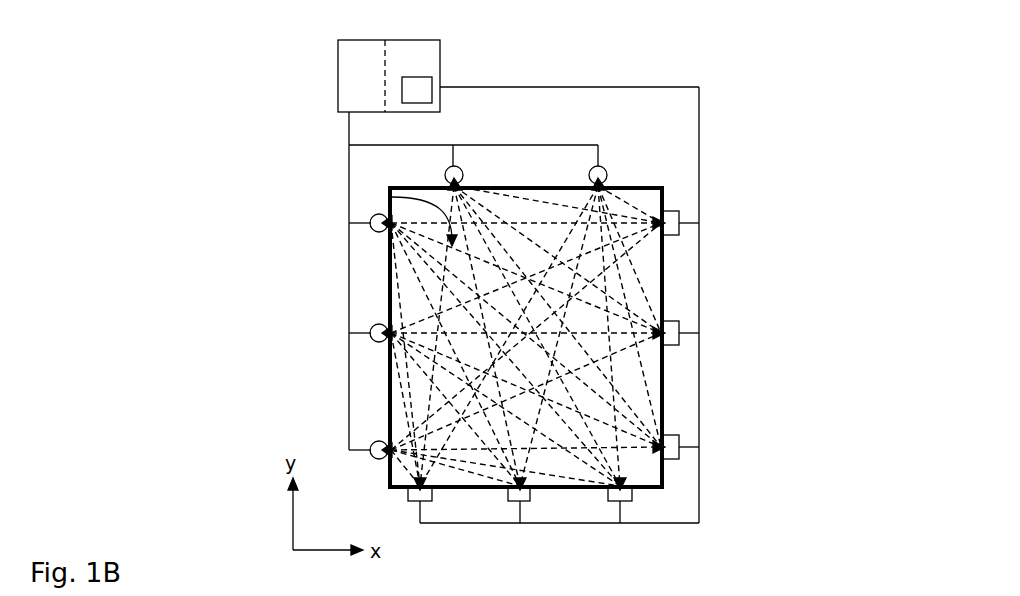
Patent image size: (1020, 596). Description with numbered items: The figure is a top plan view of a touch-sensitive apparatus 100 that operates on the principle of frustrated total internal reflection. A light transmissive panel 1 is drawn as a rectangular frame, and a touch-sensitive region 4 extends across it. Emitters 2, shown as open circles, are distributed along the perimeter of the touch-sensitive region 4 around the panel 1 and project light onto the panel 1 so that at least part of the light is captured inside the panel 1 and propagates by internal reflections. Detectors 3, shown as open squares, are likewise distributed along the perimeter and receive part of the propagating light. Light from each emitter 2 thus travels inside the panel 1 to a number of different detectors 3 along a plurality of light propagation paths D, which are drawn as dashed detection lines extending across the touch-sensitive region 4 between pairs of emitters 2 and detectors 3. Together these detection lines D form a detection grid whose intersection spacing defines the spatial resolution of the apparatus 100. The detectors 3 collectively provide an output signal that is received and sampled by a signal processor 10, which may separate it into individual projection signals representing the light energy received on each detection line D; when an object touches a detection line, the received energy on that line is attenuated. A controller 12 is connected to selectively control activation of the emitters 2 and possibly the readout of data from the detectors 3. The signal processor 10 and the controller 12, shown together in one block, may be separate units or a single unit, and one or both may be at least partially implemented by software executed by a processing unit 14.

The touch-sensitive apparatus 100 is at (766, 96).
The signal processor 10 is at (410, 46).
The controller 12 is at (338, 57).
The processing unit 14 is at (422, 77).
The panel 1 is at (625, 188).
The emitters 2 is at (458, 167).
The detectors 3 is at (680, 447).
The touch-sensitive region 4 is at (392, 197).
The light propagation paths D is at (625, 190).